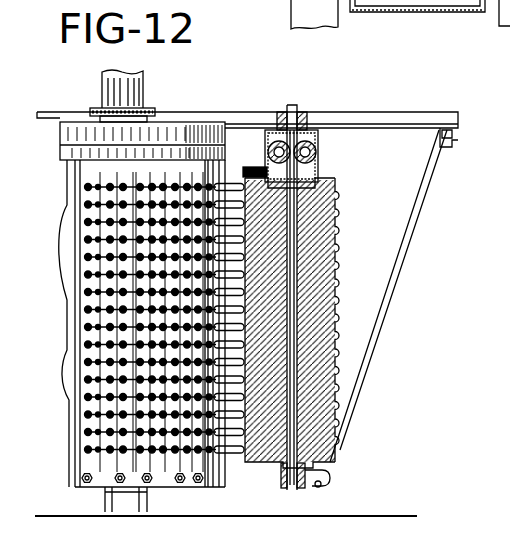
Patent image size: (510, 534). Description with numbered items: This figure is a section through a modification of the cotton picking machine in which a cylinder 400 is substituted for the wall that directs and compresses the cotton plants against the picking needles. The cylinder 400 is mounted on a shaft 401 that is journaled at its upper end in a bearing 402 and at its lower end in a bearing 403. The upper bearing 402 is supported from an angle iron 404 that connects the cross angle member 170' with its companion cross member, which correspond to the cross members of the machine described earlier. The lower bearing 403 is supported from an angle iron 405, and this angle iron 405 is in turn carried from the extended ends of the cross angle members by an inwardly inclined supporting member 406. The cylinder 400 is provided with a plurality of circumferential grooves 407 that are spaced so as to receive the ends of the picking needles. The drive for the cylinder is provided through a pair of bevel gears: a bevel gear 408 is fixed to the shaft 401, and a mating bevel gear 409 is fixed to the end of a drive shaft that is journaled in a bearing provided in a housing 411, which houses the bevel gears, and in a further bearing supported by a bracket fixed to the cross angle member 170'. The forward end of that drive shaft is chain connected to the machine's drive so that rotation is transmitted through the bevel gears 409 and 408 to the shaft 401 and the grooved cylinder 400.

The cross angle member 170' is at (270, 100).
The cylinder 400 is at (338, 208).
The shaft 401 is at (294, 110).
The bearing 402 is at (277, 116).
The bearing 403 is at (297, 486).
The angle iron 404 is at (318, 129).
The angle iron 405 is at (312, 486).
The inwardly inclined supporting member 406 is at (372, 326).
The circumferential groove 407 is at (337, 266).
The bevel gear 408 is at (312, 147).
The bevel gear 409 is at (322, 131).
The housing 411 is at (262, 150).